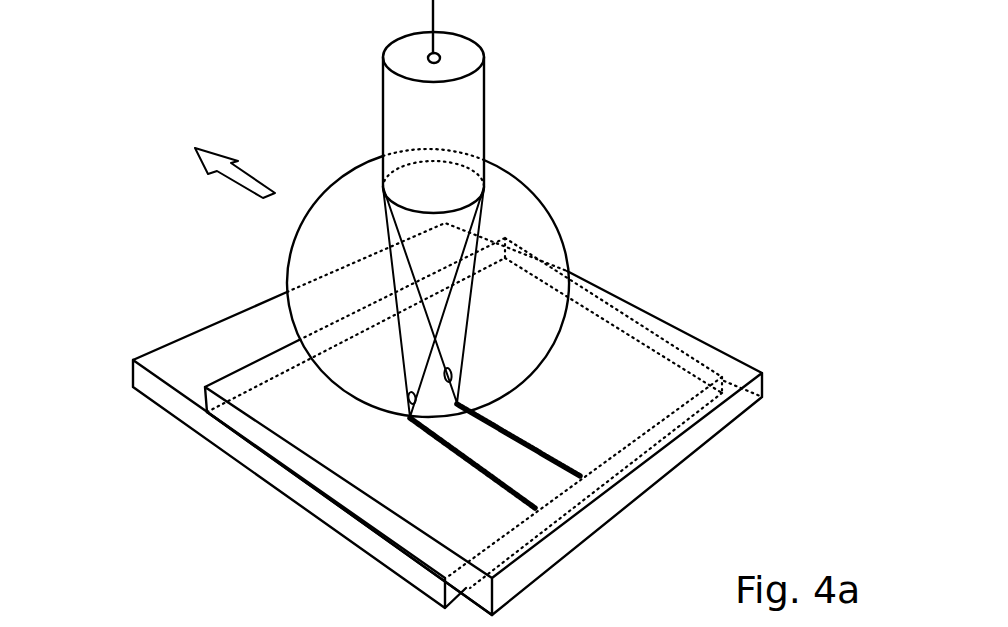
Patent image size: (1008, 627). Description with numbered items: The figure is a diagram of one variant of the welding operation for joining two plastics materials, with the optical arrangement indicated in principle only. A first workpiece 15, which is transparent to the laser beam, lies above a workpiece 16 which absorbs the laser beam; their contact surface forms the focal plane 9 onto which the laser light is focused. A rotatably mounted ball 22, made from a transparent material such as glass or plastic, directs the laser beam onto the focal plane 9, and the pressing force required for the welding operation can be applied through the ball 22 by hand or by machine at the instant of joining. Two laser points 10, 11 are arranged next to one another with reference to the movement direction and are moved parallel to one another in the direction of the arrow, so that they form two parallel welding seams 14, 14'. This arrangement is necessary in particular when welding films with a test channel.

The focal plane 9 is at (298, 483).
The laser point 10 is at (410, 417).
The laser point 11 is at (458, 405).
The welding seam 14 is at (404, 514).
The welding seam 14' is at (587, 365).
The first workpiece 15 is at (258, 440).
The workpiece 16 is at (160, 398).
The ball 22 is at (545, 228).